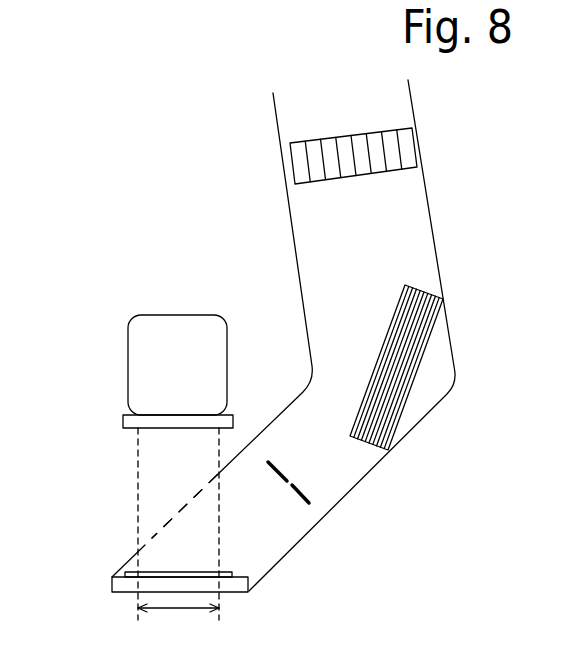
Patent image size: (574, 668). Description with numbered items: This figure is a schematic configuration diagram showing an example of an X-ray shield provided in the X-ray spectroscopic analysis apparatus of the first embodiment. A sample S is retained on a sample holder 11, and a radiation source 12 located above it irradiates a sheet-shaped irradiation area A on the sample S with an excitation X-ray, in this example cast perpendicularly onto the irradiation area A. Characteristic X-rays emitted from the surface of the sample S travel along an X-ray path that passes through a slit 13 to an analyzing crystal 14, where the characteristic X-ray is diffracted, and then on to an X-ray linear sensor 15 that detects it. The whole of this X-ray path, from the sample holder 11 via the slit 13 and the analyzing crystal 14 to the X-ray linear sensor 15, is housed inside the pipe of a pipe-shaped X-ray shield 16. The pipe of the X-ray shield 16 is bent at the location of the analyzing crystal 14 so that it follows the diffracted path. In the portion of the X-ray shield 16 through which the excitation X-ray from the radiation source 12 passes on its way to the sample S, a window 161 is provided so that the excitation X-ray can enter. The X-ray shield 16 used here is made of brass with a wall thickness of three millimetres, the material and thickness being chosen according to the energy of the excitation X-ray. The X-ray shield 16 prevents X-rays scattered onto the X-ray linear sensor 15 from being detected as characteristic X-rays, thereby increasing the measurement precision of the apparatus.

The sample holder 11 is at (247, 585).
The radiation source 12 is at (148, 345).
The slit 13 is at (302, 493).
The analyzing crystal 14 is at (415, 358).
The X-ray linear sensor 15 is at (417, 147).
The X-ray shield 16 is at (298, 270).
The window 161 is at (178, 512).
The sample S is at (178, 570).
The irradiation area A is at (178, 535).